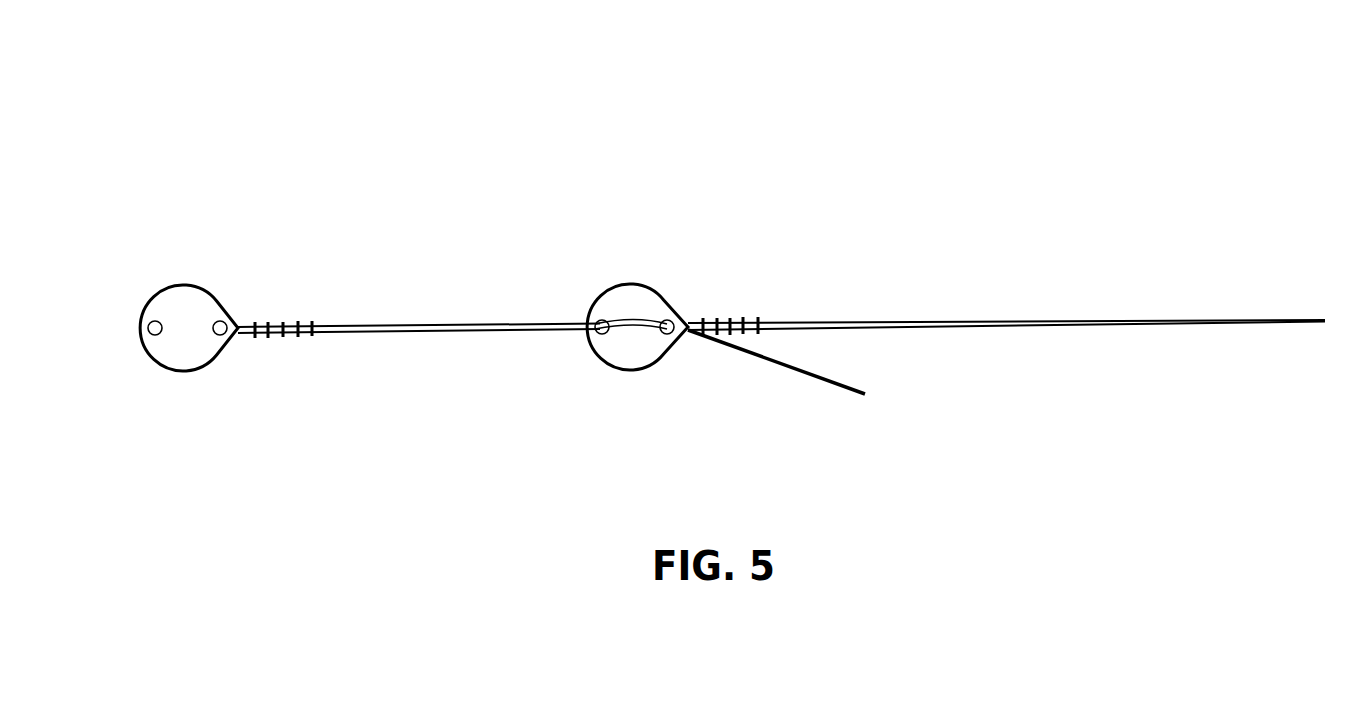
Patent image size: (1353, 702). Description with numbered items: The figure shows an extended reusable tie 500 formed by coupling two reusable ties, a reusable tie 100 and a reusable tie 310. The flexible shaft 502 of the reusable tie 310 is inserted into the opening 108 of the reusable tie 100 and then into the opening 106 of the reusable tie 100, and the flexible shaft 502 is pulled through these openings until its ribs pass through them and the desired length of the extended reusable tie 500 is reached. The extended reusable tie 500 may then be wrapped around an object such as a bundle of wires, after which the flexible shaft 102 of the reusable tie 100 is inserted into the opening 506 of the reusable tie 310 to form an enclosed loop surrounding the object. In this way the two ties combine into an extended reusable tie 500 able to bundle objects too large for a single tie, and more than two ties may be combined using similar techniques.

The extended reusable tie 500 is at (372, 95).
The reusable tie 310 is at (177, 372).
The opening 506 is at (220, 320).
The flexible shaft 502 is at (478, 430).
The reusable tie 100 is at (628, 372).
The opening 108 is at (601, 319).
The opening 106 is at (666, 319).
The flexible shaft 102 is at (1120, 420).